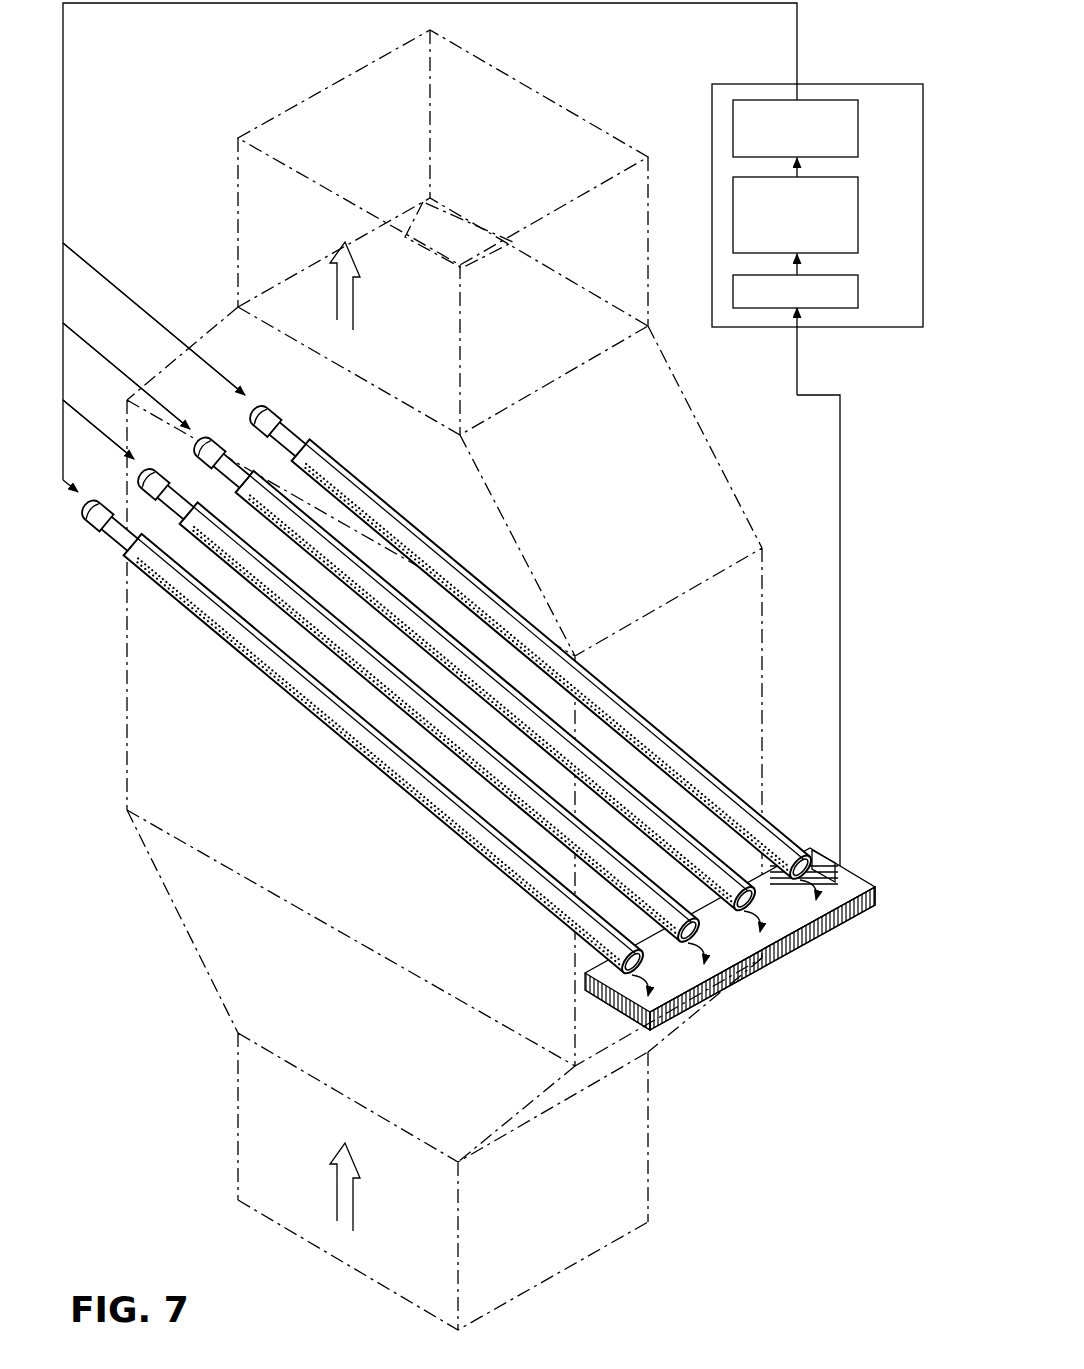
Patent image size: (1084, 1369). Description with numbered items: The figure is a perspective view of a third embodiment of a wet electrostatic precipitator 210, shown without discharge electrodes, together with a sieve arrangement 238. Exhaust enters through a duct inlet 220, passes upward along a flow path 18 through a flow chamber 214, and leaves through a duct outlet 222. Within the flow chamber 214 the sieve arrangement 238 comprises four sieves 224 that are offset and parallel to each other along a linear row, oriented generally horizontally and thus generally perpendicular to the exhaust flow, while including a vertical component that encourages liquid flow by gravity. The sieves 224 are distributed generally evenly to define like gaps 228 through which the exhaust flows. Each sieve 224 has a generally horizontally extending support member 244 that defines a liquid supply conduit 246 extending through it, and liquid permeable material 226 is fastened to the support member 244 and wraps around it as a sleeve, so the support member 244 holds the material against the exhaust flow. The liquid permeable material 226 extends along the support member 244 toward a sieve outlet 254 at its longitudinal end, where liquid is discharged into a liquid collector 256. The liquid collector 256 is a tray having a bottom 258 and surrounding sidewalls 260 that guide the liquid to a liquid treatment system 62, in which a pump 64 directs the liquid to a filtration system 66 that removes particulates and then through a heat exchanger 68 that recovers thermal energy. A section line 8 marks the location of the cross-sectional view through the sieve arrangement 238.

The section line 8 is at (640, 666).
The flow path 18 is at (355, 298).
The liquid treatment system 62 is at (892, 84).
The pump 64 is at (745, 310).
The filtration system 66 is at (733, 217).
The heat exchanger 68 is at (733, 126).
The wet electrostatic precipitator 210 is at (152, 1000).
The flow chamber 214 is at (444, 733).
The duct inlet 220 is at (280, 1226).
The duct outlet 222 is at (508, 78).
The sieve 224 is at (369, 477).
The liquid permeable material 226 is at (330, 453).
The gap 228 is at (410, 652).
The sieve arrangement 238 is at (136, 368).
The support member 244 is at (248, 468).
The liquid supply conduit 246 is at (262, 404).
The sieve outlet 254 is at (632, 975).
The liquid collector 256 is at (840, 928).
The bottom 258 is at (814, 850).
The sidewalls 260 is at (586, 990).